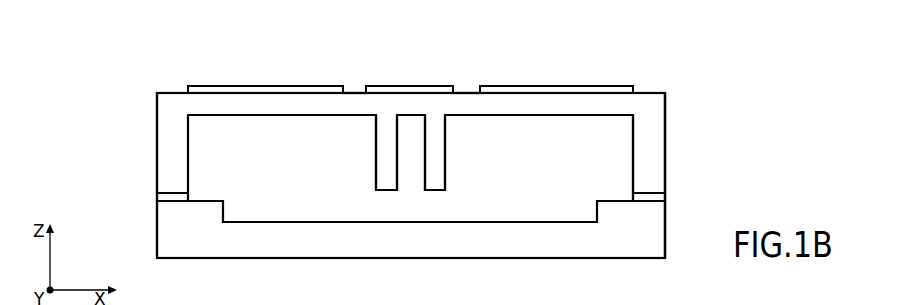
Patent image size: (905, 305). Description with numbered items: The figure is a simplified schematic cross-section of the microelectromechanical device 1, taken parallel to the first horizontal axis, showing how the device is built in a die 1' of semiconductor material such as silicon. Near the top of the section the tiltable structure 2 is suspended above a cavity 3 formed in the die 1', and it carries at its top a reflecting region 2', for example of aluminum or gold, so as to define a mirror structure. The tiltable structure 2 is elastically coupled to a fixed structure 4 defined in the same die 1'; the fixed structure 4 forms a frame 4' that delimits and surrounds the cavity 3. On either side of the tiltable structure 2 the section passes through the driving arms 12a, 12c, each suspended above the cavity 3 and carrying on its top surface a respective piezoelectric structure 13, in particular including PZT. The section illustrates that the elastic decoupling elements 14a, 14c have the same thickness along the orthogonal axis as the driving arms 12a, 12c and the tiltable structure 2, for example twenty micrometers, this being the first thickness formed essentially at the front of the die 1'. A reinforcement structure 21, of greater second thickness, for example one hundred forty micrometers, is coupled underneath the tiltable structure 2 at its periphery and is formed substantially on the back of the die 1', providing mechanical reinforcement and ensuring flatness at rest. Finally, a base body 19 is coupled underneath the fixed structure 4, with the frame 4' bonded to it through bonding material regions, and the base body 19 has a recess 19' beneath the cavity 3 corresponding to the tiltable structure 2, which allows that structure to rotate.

The microelectromechanical device 1 is at (469, 145).
The die 1' is at (382, 219).
The tiltable structure 2 is at (411, 62).
The reflecting region 2' is at (409, 64).
The cavity 3 is at (230, 165).
The fixed structure 4 is at (425, 140).
The frame 4' is at (672, 175).
The driving arm 12a is at (288, 107).
The driving arm 12c is at (535, 105).
The piezoelectric structure 13 is at (273, 87).
The elastic decoupling element 14a is at (357, 100).
The elastic decoupling element 14c is at (463, 100).
The base body 19 is at (439, 229).
The recess 19' is at (410, 253).
The reinforcement structure 21 is at (390, 163).